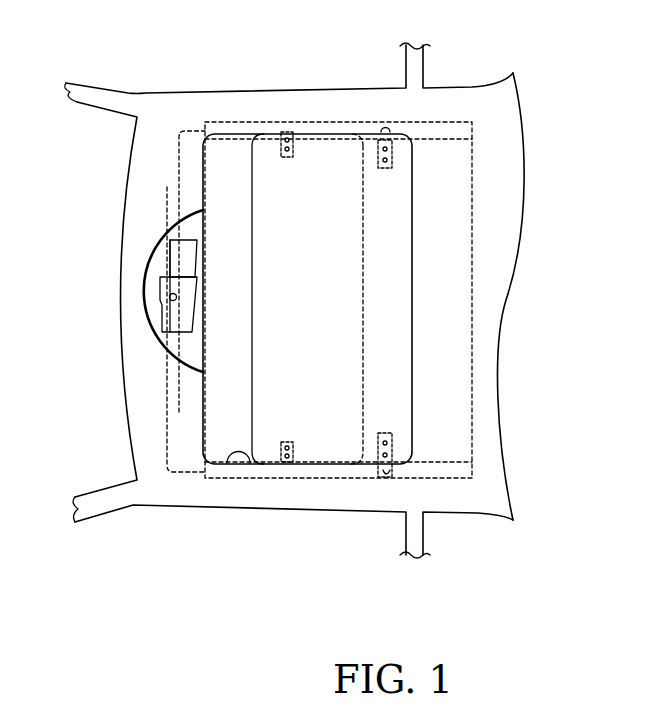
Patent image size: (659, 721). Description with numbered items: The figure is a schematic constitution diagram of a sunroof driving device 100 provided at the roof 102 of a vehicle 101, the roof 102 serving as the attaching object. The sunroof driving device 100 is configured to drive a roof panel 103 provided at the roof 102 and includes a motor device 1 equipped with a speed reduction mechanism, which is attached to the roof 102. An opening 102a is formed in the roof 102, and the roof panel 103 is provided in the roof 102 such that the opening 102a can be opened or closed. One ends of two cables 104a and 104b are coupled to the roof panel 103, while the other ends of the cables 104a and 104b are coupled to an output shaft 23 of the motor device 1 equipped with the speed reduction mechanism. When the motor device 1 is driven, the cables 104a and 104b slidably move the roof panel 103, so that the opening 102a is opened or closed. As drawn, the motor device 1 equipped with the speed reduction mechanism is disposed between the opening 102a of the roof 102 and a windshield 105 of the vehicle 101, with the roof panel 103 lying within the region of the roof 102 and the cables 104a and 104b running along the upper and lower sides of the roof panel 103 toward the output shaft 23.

The motor device equipped with speed reduction mechanism 1 is at (154, 272).
The output shaft 23 is at (169, 297).
The sunroof driving device 100 is at (155, 342).
The vehicle 101 is at (515, 101).
The roof 102 is at (507, 221).
The opening 102a is at (228, 462).
The roof panel 103 is at (397, 300).
The cable 104a is at (177, 130).
The cable 104b is at (167, 467).
The windshield 105 is at (95, 142).